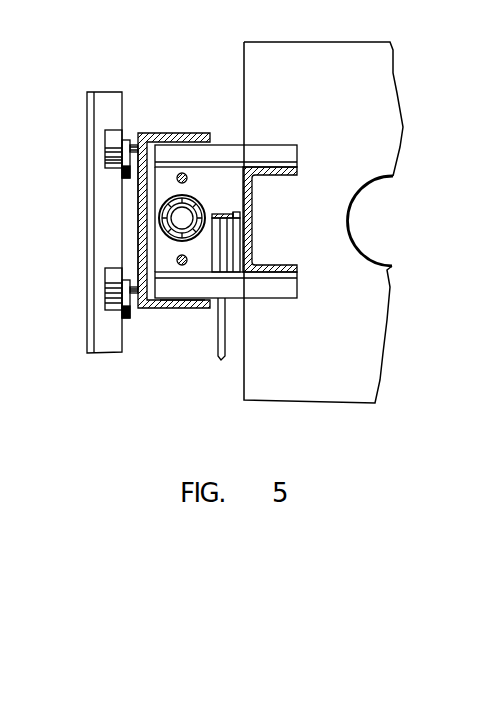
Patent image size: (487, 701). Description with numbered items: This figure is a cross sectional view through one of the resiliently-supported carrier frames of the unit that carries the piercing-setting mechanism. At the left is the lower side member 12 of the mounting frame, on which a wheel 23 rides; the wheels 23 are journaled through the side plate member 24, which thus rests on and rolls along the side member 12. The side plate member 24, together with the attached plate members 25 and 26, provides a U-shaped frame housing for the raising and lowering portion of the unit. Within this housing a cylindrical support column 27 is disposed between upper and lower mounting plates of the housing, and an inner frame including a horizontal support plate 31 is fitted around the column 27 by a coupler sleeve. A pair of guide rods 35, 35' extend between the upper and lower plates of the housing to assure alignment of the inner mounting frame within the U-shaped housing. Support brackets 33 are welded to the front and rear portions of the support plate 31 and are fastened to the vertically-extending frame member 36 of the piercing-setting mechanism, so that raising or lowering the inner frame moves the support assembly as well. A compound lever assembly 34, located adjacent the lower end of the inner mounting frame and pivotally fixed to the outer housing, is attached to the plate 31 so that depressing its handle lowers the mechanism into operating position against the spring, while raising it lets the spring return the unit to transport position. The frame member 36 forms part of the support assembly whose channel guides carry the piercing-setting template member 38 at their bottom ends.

The lower side member 12 is at (86, 123).
The wheels 23 is at (131, 127).
The side plate member 24 is at (137, 232).
The plate member 25 is at (198, 309).
The plate member 26 is at (185, 131).
The cylindrical support column 27 is at (198, 208).
The horizontal support plate 31 is at (200, 243).
The support brackets 33 is at (258, 146).
The compound lever assembly 34 is at (226, 347).
The guide rod 35 is at (108, 276).
The guide rod 35' is at (109, 189).
The frame member 36 is at (252, 209).
The piercing-setting template member 38 is at (460, 121).